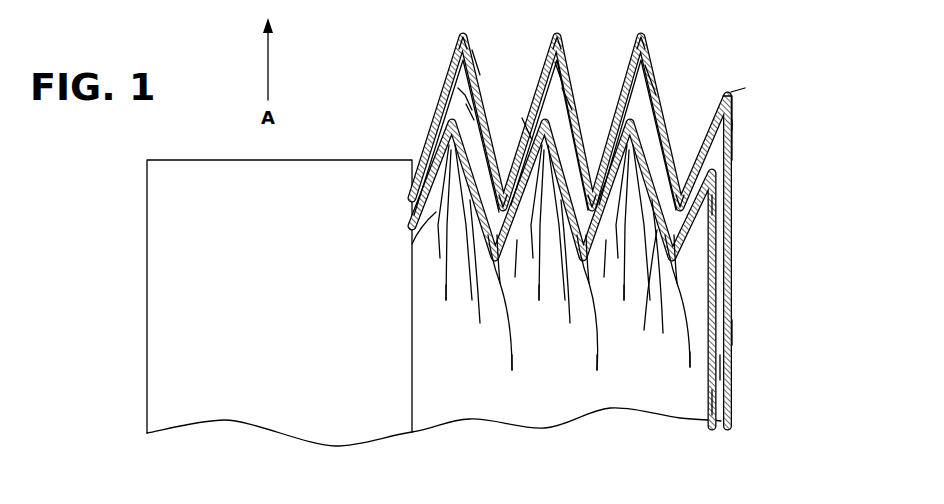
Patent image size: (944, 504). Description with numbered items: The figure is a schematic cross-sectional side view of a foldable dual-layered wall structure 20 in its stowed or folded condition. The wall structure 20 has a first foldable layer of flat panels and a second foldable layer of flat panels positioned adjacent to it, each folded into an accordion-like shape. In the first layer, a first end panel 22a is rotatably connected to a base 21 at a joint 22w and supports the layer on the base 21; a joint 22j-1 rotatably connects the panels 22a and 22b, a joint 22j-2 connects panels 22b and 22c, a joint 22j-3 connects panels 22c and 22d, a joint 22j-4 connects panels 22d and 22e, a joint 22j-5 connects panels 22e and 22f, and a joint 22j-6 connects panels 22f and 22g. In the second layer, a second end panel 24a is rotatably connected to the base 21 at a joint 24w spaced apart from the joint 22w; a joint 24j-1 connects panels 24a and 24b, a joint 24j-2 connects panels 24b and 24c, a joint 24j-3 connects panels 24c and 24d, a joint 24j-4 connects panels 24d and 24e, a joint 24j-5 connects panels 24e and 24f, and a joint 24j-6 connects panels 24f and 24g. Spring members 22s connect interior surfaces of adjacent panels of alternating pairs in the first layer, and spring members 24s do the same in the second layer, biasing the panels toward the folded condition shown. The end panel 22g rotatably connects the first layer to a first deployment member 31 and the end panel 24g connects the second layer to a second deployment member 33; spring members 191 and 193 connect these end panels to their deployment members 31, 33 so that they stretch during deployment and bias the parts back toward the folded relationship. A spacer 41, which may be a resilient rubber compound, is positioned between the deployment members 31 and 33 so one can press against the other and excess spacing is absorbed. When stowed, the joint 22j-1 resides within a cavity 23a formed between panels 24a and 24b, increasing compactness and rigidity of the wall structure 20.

The foldable dual-layered wall structure 20 is at (747, 83).
The base 21 is at (175, 333).
The joint 22w is at (412, 230).
The first end panel 22a is at (413, 245).
The panel 22b is at (482, 275).
The panel 22c is at (509, 302).
The panel 22d is at (571, 275).
The panel 22e is at (598, 302).
The panel 22f is at (667, 279).
The end panel 22g is at (703, 253).
The spring member 22s is at (539, 252).
The joint 22j-1 is at (448, 301).
The joint 22j-2 is at (510, 374).
The joint 22j-3 is at (535, 301).
The joint 22j-4 is at (593, 374).
The joint 22j-5 is at (617, 301).
The joint 22j-6 is at (682, 372).
The cavity 23a is at (465, 95).
The joint 24w is at (412, 193).
The second end panel 24a is at (466, 104).
The panel 24b is at (487, 88).
The panel 24c is at (530, 125).
The panel 24d is at (560, 80).
The panel 24e is at (568, 100).
The panel 24f is at (658, 82).
The end panel 24g is at (702, 103).
The spring member 24s is at (452, 88).
The joint 24j-1 is at (462, 35).
The joint 24j-2 is at (455, 120).
The joint 24j-3 is at (558, 35).
The joint 24j-4 is at (548, 67).
The joint 24j-5 is at (642, 35).
The joint 24j-6 is at (695, 243).
The first deployment member 31 is at (733, 400).
The second deployment member 33 is at (733, 332).
The spacer 41 is at (733, 367).
The spring member 191 is at (706, 213).
The spring member 193 is at (733, 131).